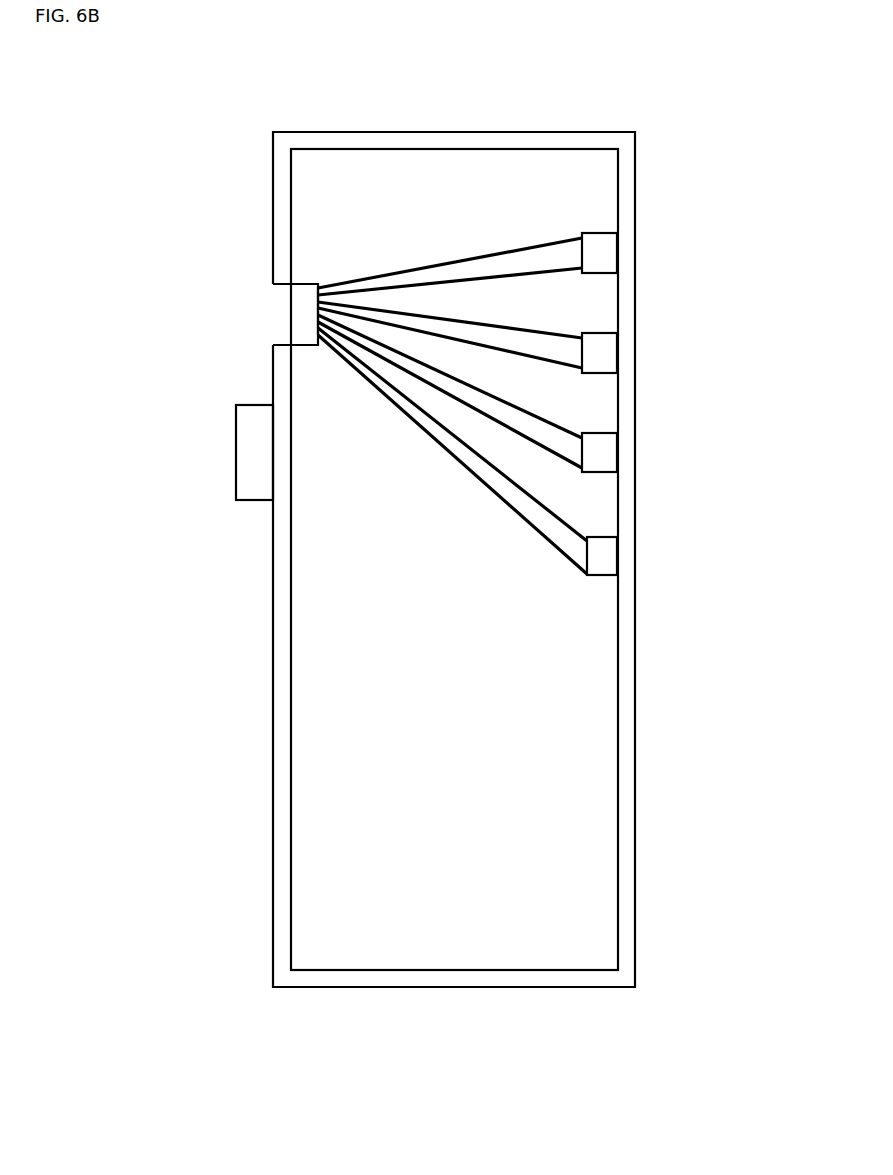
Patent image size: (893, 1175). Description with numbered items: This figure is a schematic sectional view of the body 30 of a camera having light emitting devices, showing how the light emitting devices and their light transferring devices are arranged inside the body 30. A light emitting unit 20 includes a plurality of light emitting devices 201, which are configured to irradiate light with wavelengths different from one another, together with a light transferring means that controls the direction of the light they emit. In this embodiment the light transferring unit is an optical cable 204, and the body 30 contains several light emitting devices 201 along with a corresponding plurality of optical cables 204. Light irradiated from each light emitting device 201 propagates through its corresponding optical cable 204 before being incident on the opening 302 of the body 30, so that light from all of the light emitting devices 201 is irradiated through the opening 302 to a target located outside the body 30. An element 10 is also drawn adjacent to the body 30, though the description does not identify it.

The body 30 is at (535, 132).
The opening 302 is at (252, 310).
The light source 10 is at (249, 458).
The optical cable 204 is at (518, 250).
The light emitting unit 20 is at (735, 152).
The light emitting device 201 is at (608, 256).